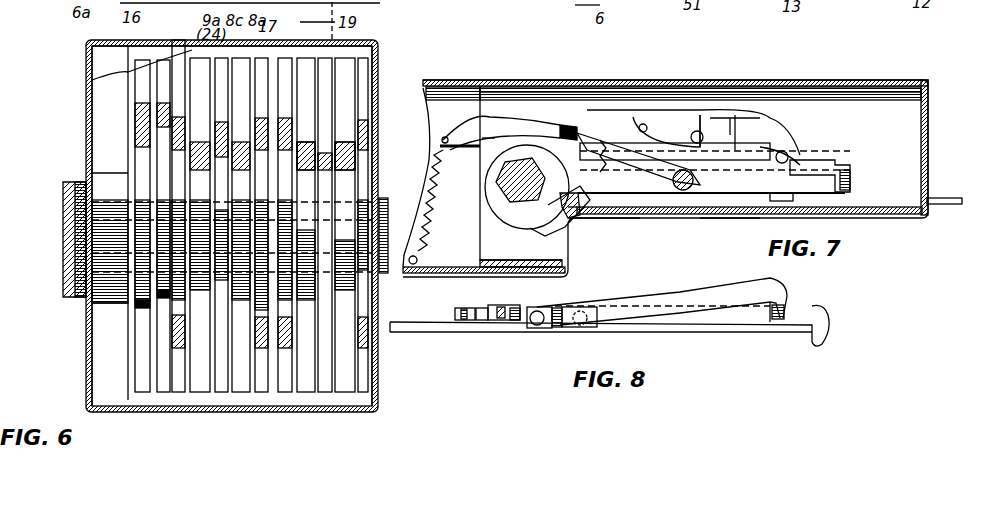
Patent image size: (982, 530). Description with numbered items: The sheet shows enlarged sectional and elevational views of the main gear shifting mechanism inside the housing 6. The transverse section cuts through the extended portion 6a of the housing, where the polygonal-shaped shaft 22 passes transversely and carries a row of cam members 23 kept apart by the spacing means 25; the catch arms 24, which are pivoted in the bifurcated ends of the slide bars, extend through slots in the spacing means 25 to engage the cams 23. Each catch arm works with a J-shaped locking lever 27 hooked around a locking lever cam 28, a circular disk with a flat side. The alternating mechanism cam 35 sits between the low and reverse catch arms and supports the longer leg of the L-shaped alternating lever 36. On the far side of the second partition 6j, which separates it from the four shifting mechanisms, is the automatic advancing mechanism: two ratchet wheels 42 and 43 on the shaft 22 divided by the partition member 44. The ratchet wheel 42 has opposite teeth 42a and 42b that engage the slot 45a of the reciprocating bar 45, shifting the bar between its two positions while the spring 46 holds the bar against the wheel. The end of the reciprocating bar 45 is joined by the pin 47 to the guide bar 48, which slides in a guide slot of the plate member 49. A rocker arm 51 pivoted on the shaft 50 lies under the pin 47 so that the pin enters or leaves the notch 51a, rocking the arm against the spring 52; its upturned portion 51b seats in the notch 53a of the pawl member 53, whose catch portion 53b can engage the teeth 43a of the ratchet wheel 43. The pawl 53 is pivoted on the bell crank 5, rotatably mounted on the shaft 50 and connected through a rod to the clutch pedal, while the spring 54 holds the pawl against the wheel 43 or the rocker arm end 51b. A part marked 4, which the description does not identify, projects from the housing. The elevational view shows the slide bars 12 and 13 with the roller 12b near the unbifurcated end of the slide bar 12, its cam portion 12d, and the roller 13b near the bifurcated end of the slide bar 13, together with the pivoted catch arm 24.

In FIG. 7, the rod 4 is at (940, 205).
In FIG. 7, the bell crank 5 is at (652, 232).
In FIG. 6, the housing 6 is at (86, 93).
In FIG. 7, the housing 6 is at (886, 72).
In FIG. 6, the extended portion of the housing 6a is at (86, 125).
In FIG. 7, the extended portion of the housing 6a is at (713, 222).
In FIG. 7, the second partition 6j is at (730, 108).
In FIG. 8, the slide bar 12 is at (560, 330).
In FIG. 8, the roller 12b is at (455, 313).
In FIG. 8, the cam portion 12d is at (503, 308).
In FIG. 8, the slide bar 13 is at (500, 322).
In FIG. 8, the roller 13b is at (490, 320).
In FIG. 7, the polygonal-shaped shaft 22 is at (515, 210).
In FIG. 6, the cam members 23 is at (202, 395).
In FIG. 6, the catch arm 24 is at (200, 42).
In FIG. 8, the catch arm 24 is at (715, 310).
In FIG. 6, the spacing means 25 is at (86, 57).
In FIG. 7, the spacing means 25 is at (497, 100).
In FIG. 6, the locking lever 27 is at (370, 140).
In FIG. 6, the locking lever cam 28 is at (365, 190).
In FIG. 6, the alternating mechanism cam 35 is at (330, 235).
In FIG. 6, the alternating lever 36 is at (372, 110).
In FIG. 6, the ratchet wheel 42 is at (150, 265).
In FIG. 7, the tooth 42a is at (485, 215).
In FIG. 6, the tooth 42b is at (155, 198).
In FIG. 7, the tooth 42b is at (578, 215).
In FIG. 6, the ratchet wheel 43 is at (140, 262).
In FIG. 7, the ratchet wheel 43 is at (490, 172).
In FIG. 6, the teeth 43a is at (86, 300).
In FIG. 7, the teeth 43a is at (565, 222).
In FIG. 6, the partition member 44 is at (92, 78).
In FIG. 7, the partition member 44 is at (523, 103).
In FIG. 6, the reciprocating bar 45 is at (150, 90).
In FIG. 7, the reciprocating bar 45 is at (732, 128).
In FIG. 6, the slot 45a is at (160, 140).
In FIG. 7, the slot 45a is at (462, 133).
In FIG. 7, the spring 46 is at (430, 272).
In FIG. 7, the pin 47 is at (800, 148).
In FIG. 7, the guide bar 48 is at (768, 145).
In FIG. 7, the plate member 49 is at (735, 150).
In FIG. 7, the shaft 50 is at (681, 192).
In FIG. 7, the rocker arm 51 is at (765, 185).
In FIG. 7, the notch 51a is at (832, 162).
In FIG. 7, the extending portion of the rocker arm 51b is at (582, 127).
In FIG. 7, the spring 52 is at (604, 179).
In FIG. 6, the pawl member 53 is at (140, 120).
In FIG. 7, the pawl member 53 is at (620, 123).
In FIG. 7, the notch 53a is at (577, 127).
In FIG. 7, the catch portion 53b is at (563, 127).
In FIG. 7, the spring 54 is at (663, 110).